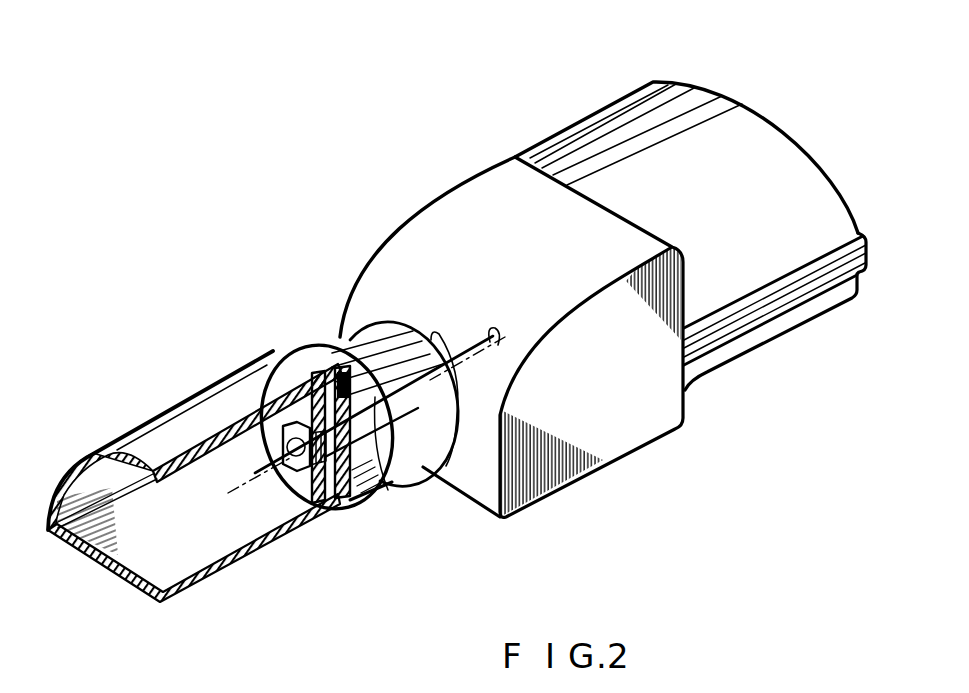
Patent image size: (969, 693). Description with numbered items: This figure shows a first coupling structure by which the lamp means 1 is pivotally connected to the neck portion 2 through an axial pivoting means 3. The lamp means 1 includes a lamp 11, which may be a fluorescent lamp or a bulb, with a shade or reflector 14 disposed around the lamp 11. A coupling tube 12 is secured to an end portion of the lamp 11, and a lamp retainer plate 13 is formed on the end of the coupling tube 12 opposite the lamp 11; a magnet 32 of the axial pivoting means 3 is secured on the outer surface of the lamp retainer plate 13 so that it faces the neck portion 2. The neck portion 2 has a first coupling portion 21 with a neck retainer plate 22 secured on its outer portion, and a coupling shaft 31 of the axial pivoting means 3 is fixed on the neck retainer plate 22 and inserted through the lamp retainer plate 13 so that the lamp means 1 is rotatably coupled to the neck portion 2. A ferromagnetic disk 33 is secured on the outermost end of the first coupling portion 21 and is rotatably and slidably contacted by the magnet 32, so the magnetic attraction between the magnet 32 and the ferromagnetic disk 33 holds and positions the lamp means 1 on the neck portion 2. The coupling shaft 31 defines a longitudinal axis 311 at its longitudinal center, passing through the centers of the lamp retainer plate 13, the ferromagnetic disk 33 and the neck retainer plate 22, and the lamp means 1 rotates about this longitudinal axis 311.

The lamp means 1 is at (597, 113).
The lamp 11 is at (775, 343).
The coupling tube 12 is at (342, 337).
The lamp retainer plate 13 is at (375, 450).
The shade or reflector 14 is at (809, 193).
The neck portion 2 is at (134, 418).
The first coupling portion 21 is at (215, 388).
The neck retainer plate 22 is at (297, 493).
The axial pivoting means 3 is at (296, 344).
The coupling shaft 31 is at (368, 490).
The longitudinal axis 311 is at (497, 337).
The magnet 32 is at (388, 398).
The ferromagnetic disk 33 is at (350, 495).